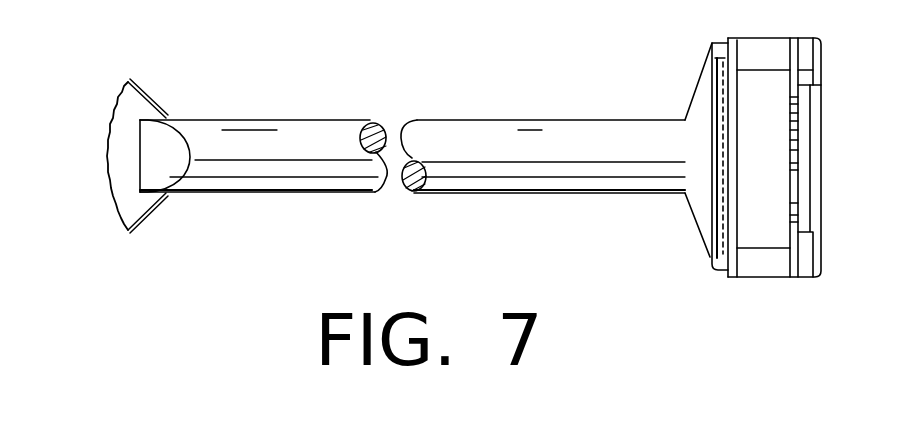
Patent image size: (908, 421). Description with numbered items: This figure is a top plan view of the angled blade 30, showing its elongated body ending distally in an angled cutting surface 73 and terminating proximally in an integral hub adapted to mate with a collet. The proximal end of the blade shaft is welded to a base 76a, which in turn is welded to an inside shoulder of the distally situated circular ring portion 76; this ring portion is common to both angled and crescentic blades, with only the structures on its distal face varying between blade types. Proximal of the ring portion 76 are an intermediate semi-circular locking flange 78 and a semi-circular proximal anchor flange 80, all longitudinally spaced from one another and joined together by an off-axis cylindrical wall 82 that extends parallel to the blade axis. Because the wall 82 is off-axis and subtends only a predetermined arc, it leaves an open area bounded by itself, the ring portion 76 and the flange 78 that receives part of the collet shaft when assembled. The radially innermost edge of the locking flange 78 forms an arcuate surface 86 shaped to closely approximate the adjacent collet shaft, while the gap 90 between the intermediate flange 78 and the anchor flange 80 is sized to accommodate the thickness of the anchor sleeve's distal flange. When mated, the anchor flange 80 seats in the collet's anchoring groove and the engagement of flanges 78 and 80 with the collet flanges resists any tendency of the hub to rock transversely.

The blade 30 is at (478, 96).
The angled cutting surface 73 is at (132, 204).
The circular ring portion 76 is at (731, 268).
The base 76a is at (707, 203).
The intermediate semi-circular locking flange 78 is at (793, 256).
The semi-circular proximal anchor flange 80 is at (813, 232).
The off-axis cylindrical wall 82 is at (773, 266).
The arcuate surface 86 is at (799, 178).
The gap 90 is at (804, 86).